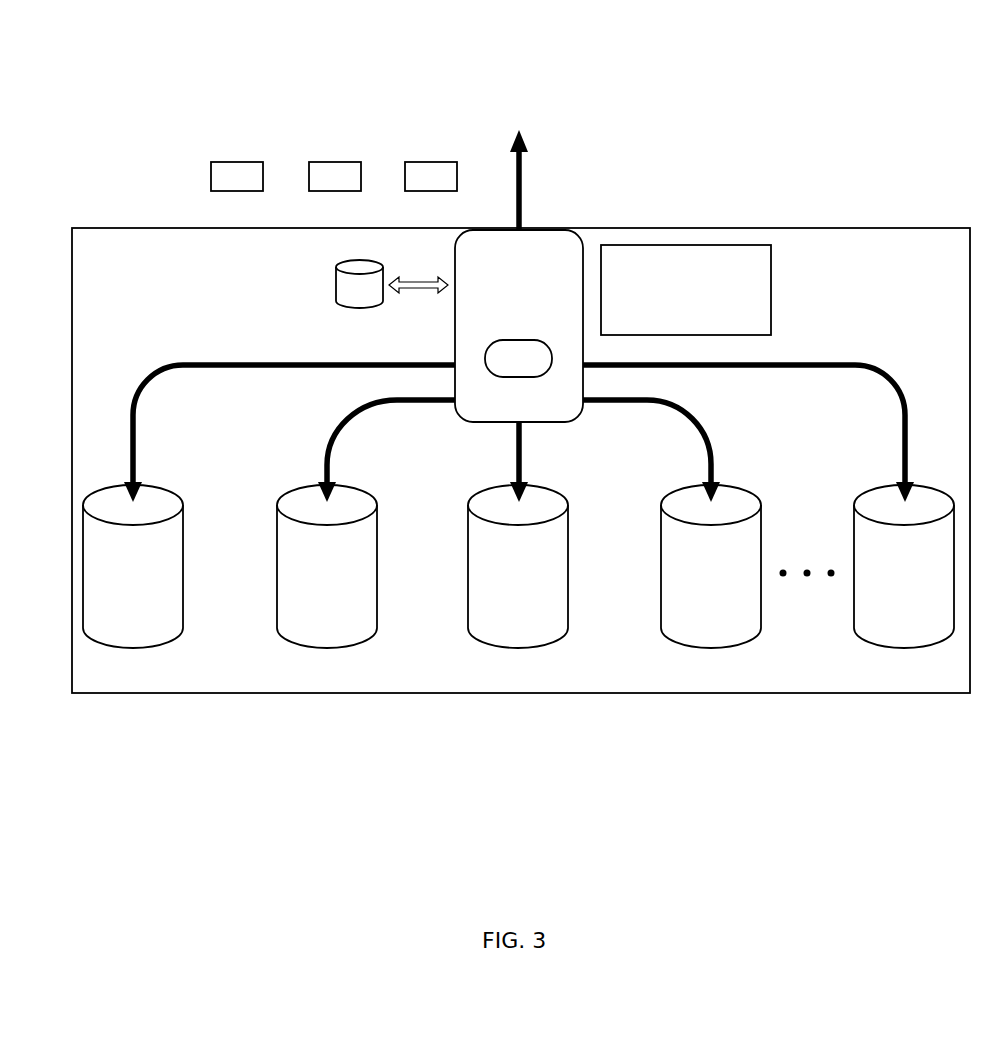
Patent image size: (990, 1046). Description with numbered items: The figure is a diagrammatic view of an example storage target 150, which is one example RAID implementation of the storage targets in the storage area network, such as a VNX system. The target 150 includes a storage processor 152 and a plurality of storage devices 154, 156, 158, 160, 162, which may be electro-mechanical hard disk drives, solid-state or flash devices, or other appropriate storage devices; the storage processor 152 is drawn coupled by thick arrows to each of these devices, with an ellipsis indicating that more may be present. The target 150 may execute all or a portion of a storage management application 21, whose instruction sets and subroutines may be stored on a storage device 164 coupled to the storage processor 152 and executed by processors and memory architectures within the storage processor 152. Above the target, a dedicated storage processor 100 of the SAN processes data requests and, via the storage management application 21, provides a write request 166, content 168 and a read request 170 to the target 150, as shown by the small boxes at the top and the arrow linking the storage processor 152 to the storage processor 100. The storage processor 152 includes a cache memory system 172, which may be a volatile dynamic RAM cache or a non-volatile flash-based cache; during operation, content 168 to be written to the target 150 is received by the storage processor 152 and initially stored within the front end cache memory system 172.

The storage processor 100 is at (519, 141).
The target 150 is at (521, 460).
The storage processor 152 is at (519, 326).
The storage device 154 is at (269, 506).
The storage device 156 is at (366, 524).
The storage device 158 is at (518, 535).
The storage device 160 is at (672, 524).
The storage device 162 is at (768, 506).
The storage device 164 is at (392, 284).
The write request 166 is at (211, 183).
The content 168 is at (309, 183).
The read request 170 is at (405, 183).
The cache memory system 172 is at (518, 358).
The storage management application 21 is at (771, 300).